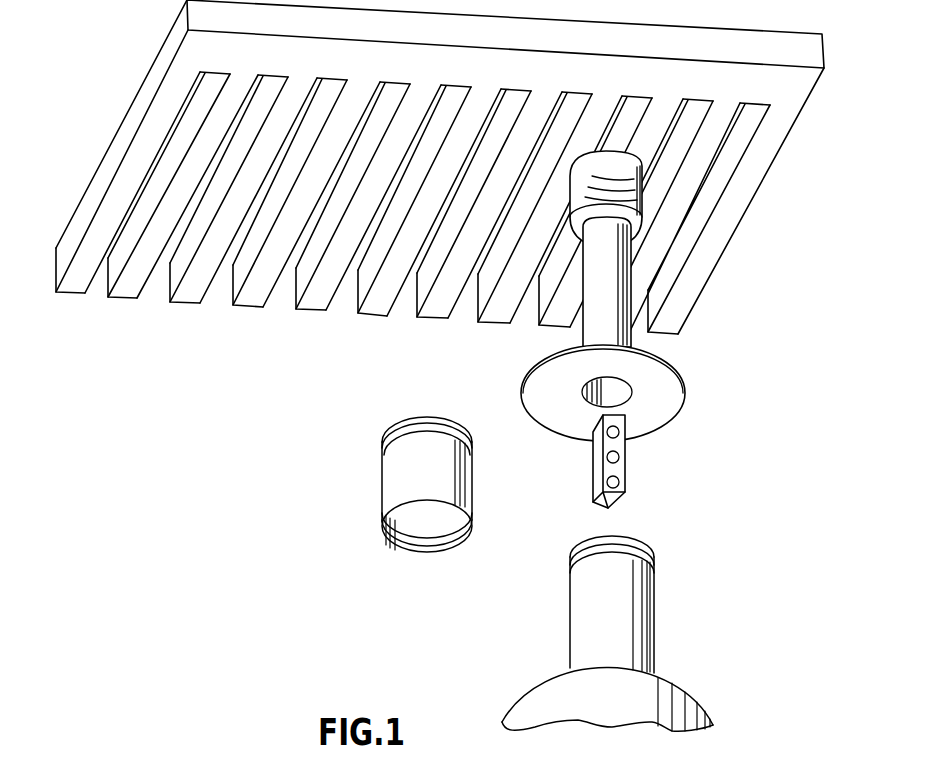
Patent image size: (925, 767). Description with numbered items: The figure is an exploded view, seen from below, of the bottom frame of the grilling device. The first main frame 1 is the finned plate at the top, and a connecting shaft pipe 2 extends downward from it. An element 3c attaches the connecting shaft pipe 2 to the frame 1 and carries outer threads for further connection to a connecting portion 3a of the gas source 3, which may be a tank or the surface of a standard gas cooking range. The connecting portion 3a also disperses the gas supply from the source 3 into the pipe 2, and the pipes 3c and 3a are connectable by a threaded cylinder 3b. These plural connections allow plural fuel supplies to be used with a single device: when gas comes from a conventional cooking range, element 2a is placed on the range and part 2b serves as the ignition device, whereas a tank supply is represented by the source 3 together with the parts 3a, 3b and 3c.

The first main frame 1 is at (736, 235).
The connecting shaft pipe 2 is at (622, 312).
The element placed on cooking range 2a is at (688, 394).
The ignition device 2b is at (623, 462).
The gas source 3 is at (680, 705).
The connecting portion of the gas source 3a is at (653, 595).
The threaded cylinder 3b is at (382, 473).
The attaching element 3c is at (630, 178).